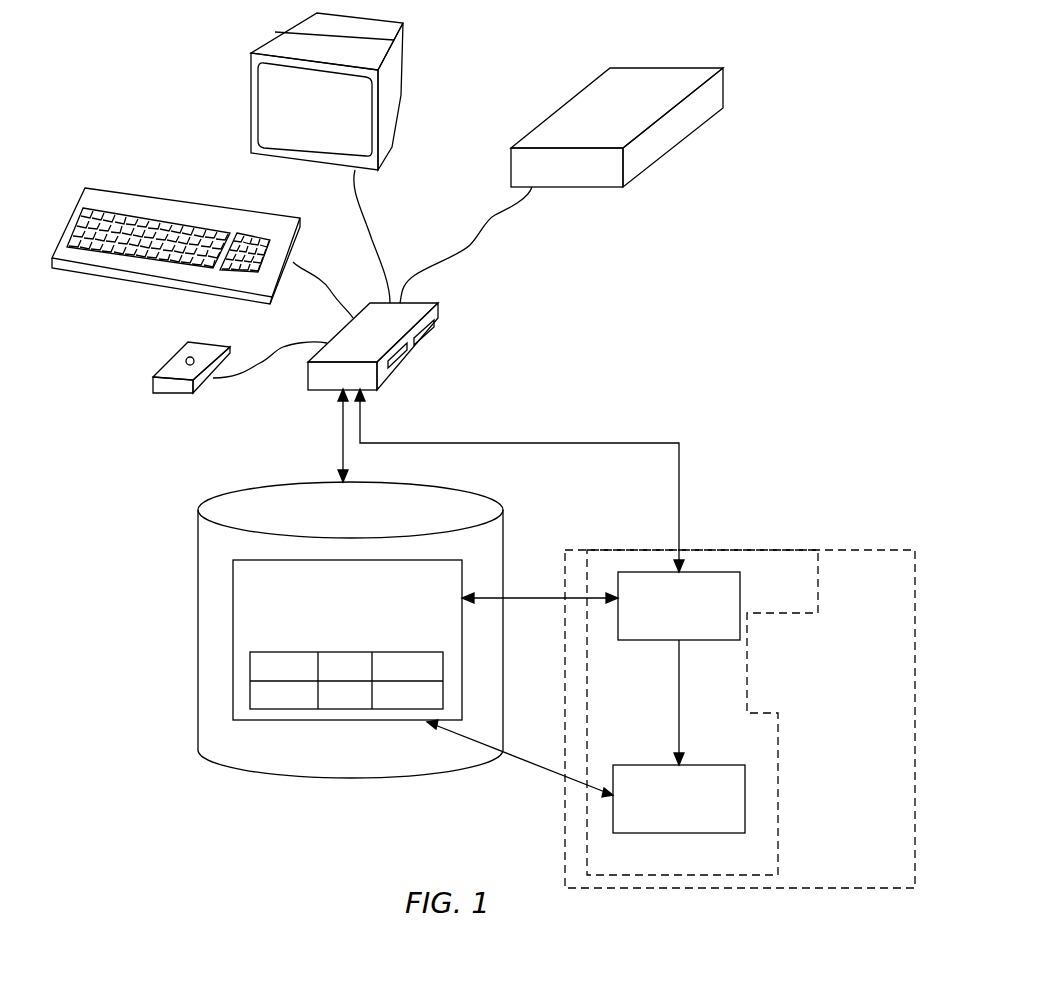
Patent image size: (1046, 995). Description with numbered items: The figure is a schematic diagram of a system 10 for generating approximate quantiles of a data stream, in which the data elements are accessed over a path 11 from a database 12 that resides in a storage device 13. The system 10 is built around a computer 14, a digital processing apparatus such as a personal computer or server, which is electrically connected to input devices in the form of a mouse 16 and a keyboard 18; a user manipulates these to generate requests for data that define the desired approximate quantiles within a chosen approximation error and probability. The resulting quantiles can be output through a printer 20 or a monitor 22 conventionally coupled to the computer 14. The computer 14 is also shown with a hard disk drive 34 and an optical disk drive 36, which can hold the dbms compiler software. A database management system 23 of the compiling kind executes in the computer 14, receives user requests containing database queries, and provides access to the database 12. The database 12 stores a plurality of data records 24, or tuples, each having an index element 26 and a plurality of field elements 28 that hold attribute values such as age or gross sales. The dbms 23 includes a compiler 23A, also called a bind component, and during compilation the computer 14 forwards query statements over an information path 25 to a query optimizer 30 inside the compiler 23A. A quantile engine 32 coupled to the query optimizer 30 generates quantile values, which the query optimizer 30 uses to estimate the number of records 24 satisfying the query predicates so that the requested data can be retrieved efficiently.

The system 10 is at (135, 533).
The path 11 is at (340, 444).
The database 12 is at (487, 555).
The storage device 13 is at (197, 622).
The computer 14 is at (420, 366).
The mouse 16 is at (165, 393).
The keyboard 18 is at (140, 193).
The printer 20 is at (687, 115).
The monitor 22 is at (403, 50).
The database management system 23 is at (825, 548).
The compiler 23A is at (728, 548).
The data records 24 is at (270, 744).
The information path 25 is at (560, 442).
The index element 26 is at (293, 710).
The field elements 28 is at (373, 710).
The query optimizer 30 is at (710, 765).
The quantile engine 32 is at (648, 640).
The hard disk drive 34 is at (433, 325).
The optical disk drive 36 is at (410, 355).